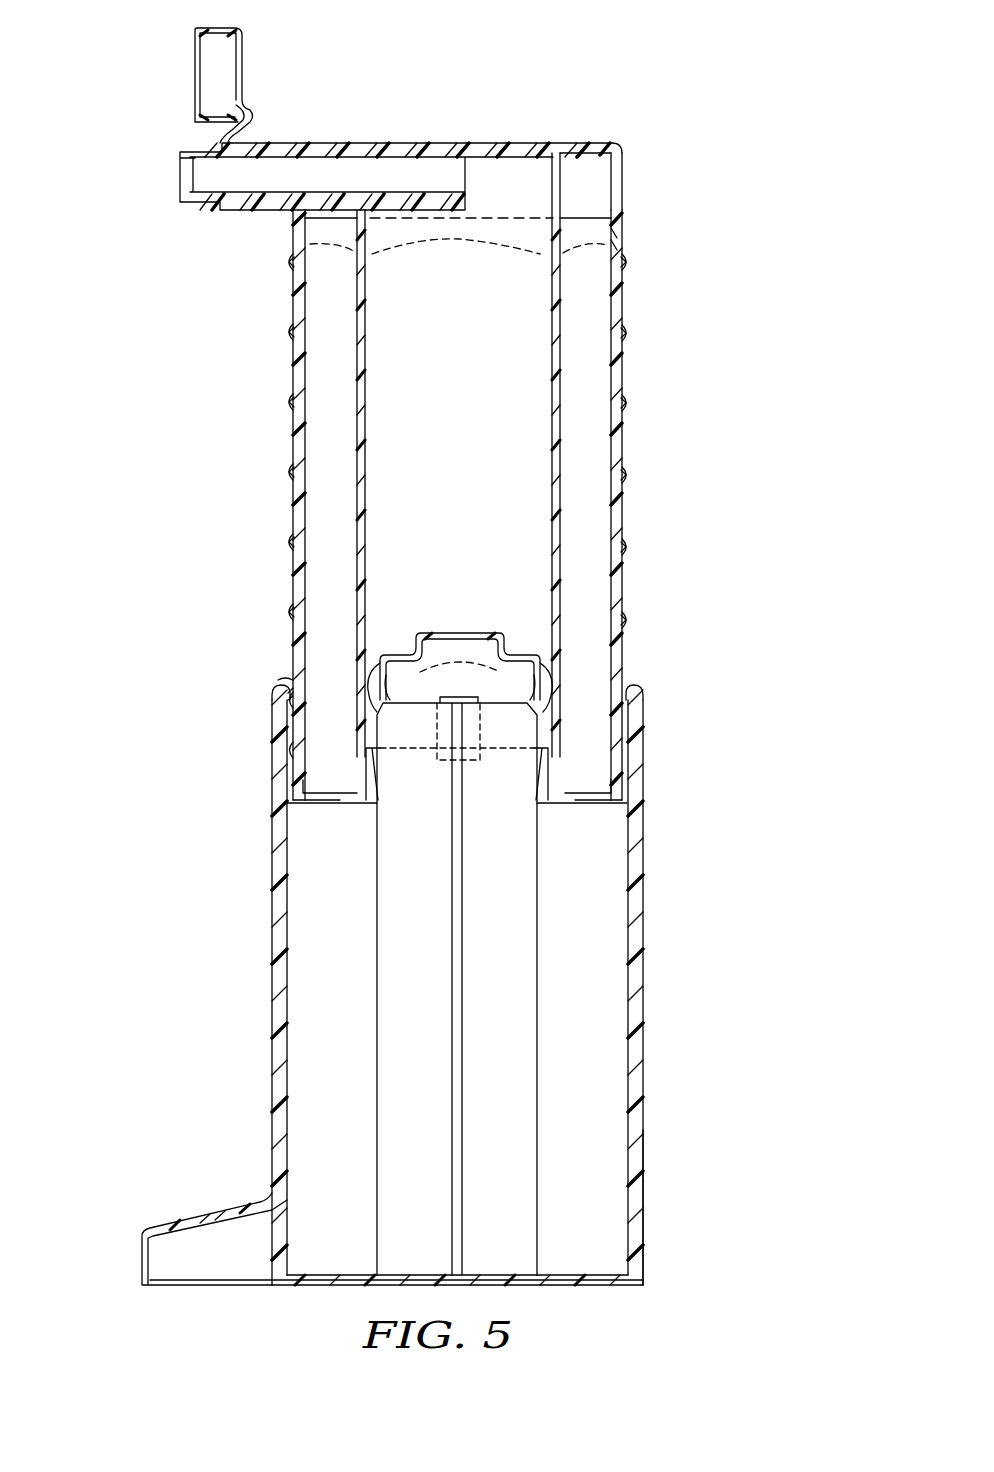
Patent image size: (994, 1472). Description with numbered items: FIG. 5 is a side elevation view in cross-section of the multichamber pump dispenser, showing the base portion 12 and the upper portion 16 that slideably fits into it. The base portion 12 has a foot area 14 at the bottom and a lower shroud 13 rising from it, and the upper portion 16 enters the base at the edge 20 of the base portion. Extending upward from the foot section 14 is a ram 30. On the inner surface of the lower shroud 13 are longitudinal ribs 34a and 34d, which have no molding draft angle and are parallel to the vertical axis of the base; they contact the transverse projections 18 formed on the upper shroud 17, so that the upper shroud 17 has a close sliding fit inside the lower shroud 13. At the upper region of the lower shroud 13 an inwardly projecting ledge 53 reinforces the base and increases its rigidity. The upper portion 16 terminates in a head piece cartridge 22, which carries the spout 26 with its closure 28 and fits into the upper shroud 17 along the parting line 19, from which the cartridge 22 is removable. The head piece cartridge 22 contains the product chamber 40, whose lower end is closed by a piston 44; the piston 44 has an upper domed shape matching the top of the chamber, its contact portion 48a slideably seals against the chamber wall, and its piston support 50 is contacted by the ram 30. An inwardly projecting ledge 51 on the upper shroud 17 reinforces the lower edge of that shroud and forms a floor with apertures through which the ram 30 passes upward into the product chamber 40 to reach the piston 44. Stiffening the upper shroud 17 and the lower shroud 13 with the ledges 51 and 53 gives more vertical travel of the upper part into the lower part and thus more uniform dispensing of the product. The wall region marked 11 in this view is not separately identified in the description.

The container body 11 is at (443, 967).
The base portion 12 is at (443, 967).
The lower shroud 13 is at (645, 1140).
The foot area 14 is at (197, 1210).
The upper portion 16 is at (444, 488).
The upper shroud 17 is at (295, 288).
The transverse projections 18 is at (628, 266).
The parting line 19 is at (583, 243).
The edge 20 is at (633, 681).
The head piece cartridge 22 is at (618, 183).
The spout 26 is at (266, 141).
The closure 28 is at (240, 58).
The ram 30 is at (525, 937).
The longitudinal rib 34a is at (272, 913).
The longitudinal rib 34d is at (630, 1016).
The product chamber 40 is at (388, 355).
The piston 44 is at (470, 683).
The contact portion 48a is at (547, 690).
The piston support 50 is at (503, 655).
The inwardly projecting ledge 51 is at (332, 805).
The inwardly projecting ledge 53 is at (287, 693).